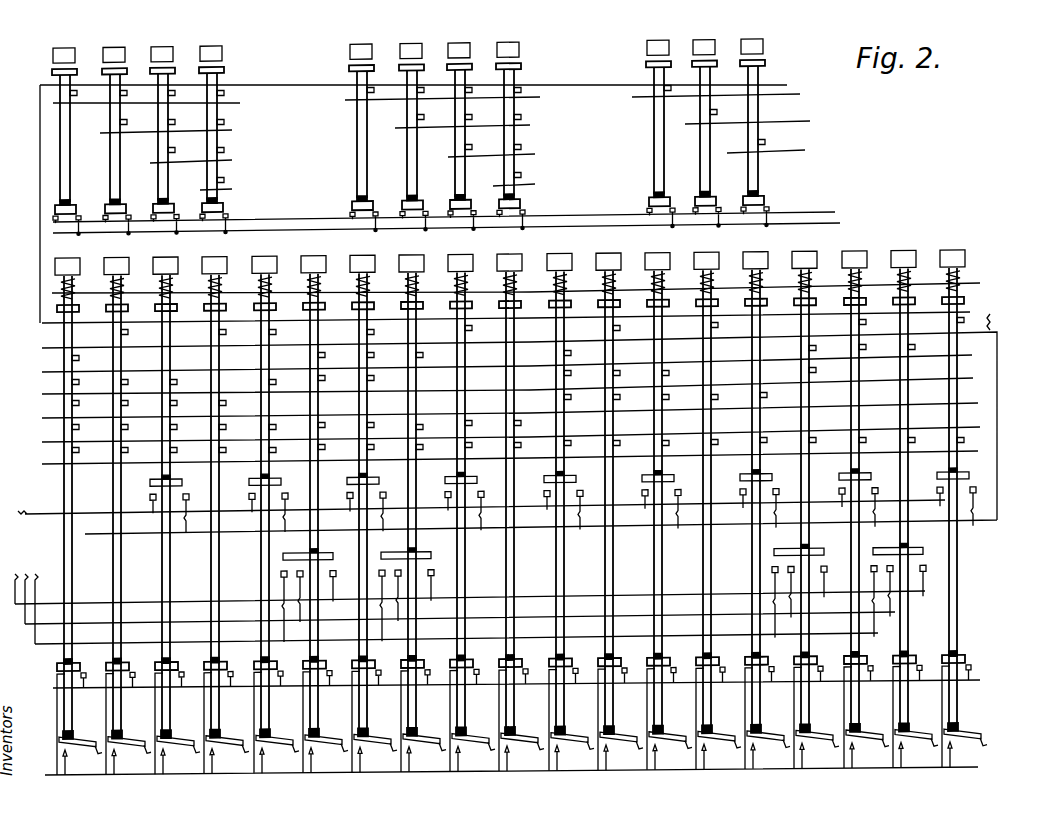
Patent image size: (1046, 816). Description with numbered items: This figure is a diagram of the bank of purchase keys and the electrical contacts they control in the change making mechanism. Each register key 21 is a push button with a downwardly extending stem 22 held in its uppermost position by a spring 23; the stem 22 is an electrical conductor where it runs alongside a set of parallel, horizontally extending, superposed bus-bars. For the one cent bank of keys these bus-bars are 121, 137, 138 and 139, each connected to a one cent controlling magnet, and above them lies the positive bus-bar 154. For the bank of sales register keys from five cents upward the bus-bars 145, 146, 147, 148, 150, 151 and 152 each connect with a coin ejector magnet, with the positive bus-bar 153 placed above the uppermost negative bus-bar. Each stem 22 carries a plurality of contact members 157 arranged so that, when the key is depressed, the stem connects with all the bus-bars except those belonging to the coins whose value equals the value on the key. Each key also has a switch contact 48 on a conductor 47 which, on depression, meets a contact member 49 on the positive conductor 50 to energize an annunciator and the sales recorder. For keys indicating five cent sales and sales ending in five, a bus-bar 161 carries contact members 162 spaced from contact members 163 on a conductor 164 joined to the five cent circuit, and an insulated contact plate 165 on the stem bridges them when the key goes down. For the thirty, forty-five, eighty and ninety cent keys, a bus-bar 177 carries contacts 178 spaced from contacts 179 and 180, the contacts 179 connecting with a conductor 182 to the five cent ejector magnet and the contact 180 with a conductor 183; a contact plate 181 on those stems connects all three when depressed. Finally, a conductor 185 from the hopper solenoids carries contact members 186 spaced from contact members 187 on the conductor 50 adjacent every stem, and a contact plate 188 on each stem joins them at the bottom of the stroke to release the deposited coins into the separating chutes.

The register key 21 is at (71, 160).
The stem 22 is at (78, 48).
The spring 23 is at (173, 290).
The conductor 47 is at (335, 750).
The switch contact 48 is at (345, 736).
The contact member 49 is at (302, 733).
The conductor 50 is at (843, 223).
The one cent controlling magnet bus-bar 121 is at (233, 189).
The bus-bar 137 is at (233, 161).
The bus-bar 138 is at (233, 131).
The bus-bar 139 is at (243, 101).
The bus-bar 145 is at (538, 184).
The bus-bar 146 is at (538, 154).
The bus-bar 147 is at (533, 125).
The bus-bar 148 is at (543, 97).
The bus-bar 150 is at (803, 94).
The bus-bar 151 is at (812, 121).
The bus-bar 152 is at (808, 150).
The positive bus-bar 153 is at (70, 322).
The positive bus-bar 154 is at (42, 250).
The contact member 157 is at (177, 404).
The conductor 161 is at (62, 516).
The contact member 162 is at (152, 496).
The contact member 163 is at (188, 498).
The conductor 164 is at (990, 400).
The contact plate 165 is at (178, 483).
The conductor 177 is at (86, 624).
The contact 178 is at (280, 572).
The contact 179 is at (280, 578).
The contact 180 is at (333, 572).
The contact plate 181 is at (303, 555).
The conductor 182 is at (86, 644).
The conductor 183 is at (86, 603).
The conductor 185 is at (295, 221).
The contact member 186 is at (355, 672).
The contact member 187 is at (254, 671).
The contact plate 188 is at (282, 670).